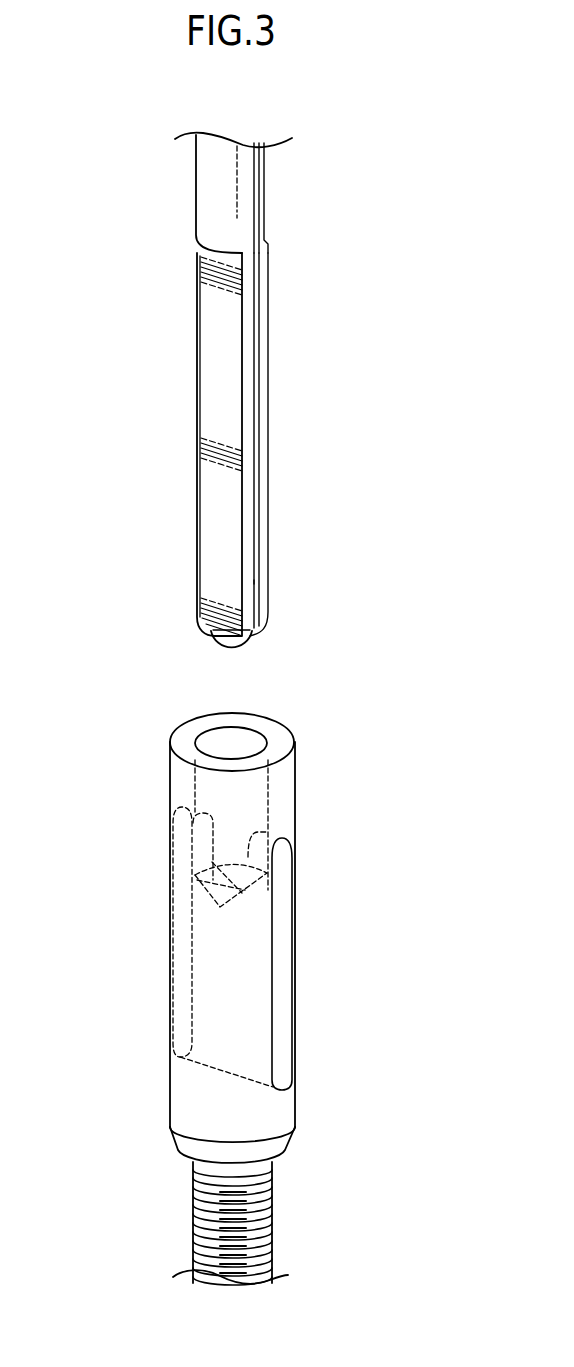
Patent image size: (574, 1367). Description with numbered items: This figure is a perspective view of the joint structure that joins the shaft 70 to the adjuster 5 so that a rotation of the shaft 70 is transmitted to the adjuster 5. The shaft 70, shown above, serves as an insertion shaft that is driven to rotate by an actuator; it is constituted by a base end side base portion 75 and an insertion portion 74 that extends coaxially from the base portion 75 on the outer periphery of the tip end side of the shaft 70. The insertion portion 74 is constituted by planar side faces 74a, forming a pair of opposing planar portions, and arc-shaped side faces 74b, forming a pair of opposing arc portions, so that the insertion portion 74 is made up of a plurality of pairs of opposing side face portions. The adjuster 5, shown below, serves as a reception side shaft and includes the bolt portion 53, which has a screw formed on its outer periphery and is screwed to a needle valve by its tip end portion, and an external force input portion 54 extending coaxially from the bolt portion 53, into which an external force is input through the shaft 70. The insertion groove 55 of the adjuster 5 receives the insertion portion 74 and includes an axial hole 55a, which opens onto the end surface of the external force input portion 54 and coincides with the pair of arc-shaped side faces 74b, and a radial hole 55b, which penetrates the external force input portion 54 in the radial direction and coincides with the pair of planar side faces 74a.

The shaft 70 is at (290, 257).
The base portion 75 is at (207, 212).
The insertion portion 74 is at (361, 505).
The planar side faces 74a is at (210, 532).
The arc-shaped side faces 74b is at (255, 565).
The adjuster 5 is at (327, 938).
The external force input portion 54 is at (195, 1092).
The insertion groove 55 is at (240, 750).
The axial hole 55a is at (268, 793).
The radial hole 55b is at (280, 1040).
The bolt portion 53 is at (272, 1230).